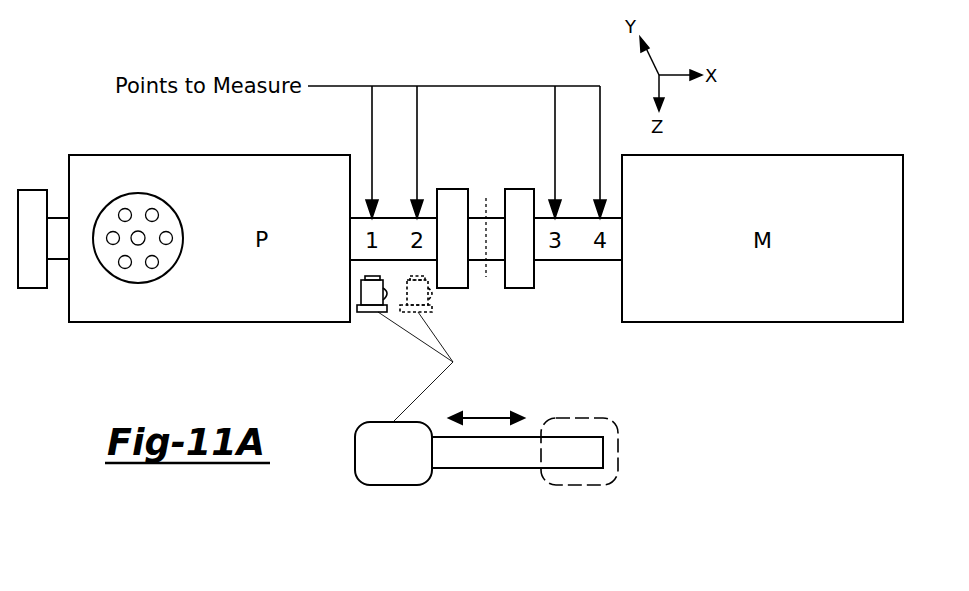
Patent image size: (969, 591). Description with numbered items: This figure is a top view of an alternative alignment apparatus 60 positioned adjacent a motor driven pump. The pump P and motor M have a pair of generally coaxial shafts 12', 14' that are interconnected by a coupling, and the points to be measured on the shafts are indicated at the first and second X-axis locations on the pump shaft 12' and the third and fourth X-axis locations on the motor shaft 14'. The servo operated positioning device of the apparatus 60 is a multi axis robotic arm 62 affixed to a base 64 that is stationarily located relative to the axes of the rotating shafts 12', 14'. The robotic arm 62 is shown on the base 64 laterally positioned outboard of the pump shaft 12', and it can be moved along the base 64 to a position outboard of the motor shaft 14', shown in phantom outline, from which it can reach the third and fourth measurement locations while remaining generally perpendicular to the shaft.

The pump shaft 12' is at (409, 218).
The motor shaft 14' is at (563, 218).
The alignment apparatus 60 is at (450, 453).
The robotic arm 62 is at (395, 485).
The base 64 is at (482, 468).